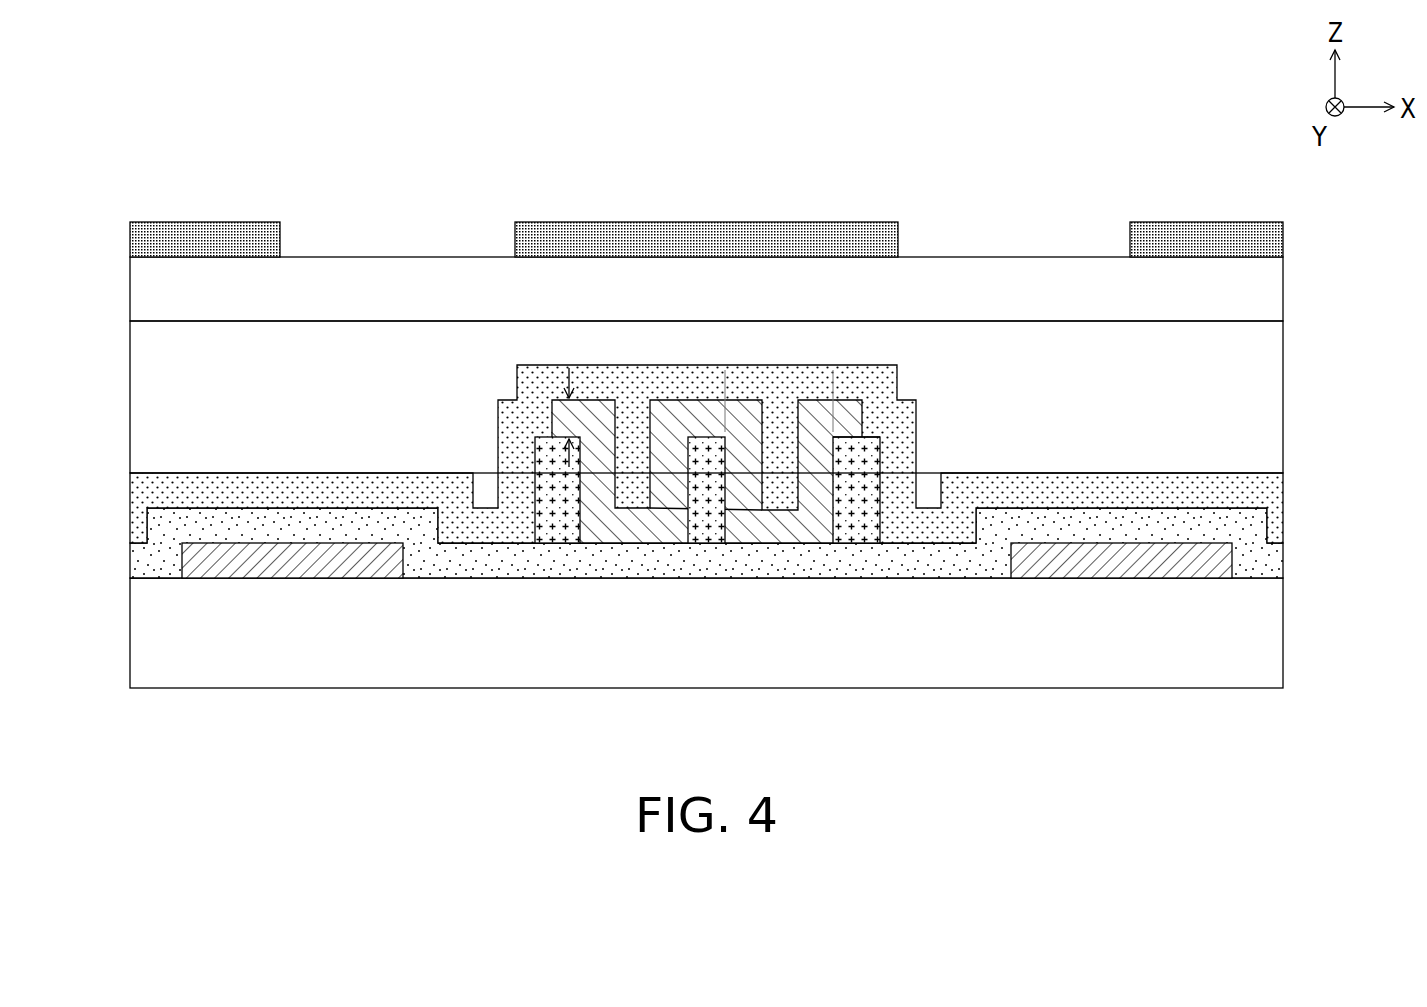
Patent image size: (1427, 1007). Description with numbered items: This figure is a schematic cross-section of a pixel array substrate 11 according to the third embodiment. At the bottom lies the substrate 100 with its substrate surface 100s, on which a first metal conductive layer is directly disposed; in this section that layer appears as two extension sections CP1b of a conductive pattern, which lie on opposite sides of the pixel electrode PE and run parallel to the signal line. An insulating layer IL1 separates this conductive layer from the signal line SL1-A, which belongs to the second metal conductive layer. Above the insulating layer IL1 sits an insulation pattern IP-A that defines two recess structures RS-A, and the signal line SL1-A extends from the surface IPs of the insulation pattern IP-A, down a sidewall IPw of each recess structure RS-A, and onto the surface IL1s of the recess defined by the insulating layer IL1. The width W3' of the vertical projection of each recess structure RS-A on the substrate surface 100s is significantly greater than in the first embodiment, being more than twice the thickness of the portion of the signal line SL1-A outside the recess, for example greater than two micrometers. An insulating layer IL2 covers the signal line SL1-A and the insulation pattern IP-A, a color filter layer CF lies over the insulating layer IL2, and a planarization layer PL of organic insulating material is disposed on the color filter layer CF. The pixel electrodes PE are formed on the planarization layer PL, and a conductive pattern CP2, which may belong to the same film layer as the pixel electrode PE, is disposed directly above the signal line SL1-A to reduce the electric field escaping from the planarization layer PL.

The substrate 100 is at (1283, 640).
The substrate surface 100s is at (157, 573).
The insulating layer IL1 is at (1283, 562).
The surface of the recess structure IL1s is at (635, 540).
The extension sections CP1b is at (290, 578).
The insulating layer IL2 is at (1283, 488).
The signal line SL1-A is at (675, 415).
The recess structure RS-A is at (797, 524).
The insulation pattern IP-A is at (866, 462).
The sidewall IPw is at (585, 525).
The surface of the insulation pattern IPs is at (870, 434).
The width W3' is at (779, 400).
The color filter layer CF is at (1283, 396).
The planarization layer PL is at (1283, 290).
The pixel electrode PE is at (188, 228).
The conductive pattern CP2 is at (800, 228).
The pixel array substrate 11 is at (1392, 760).